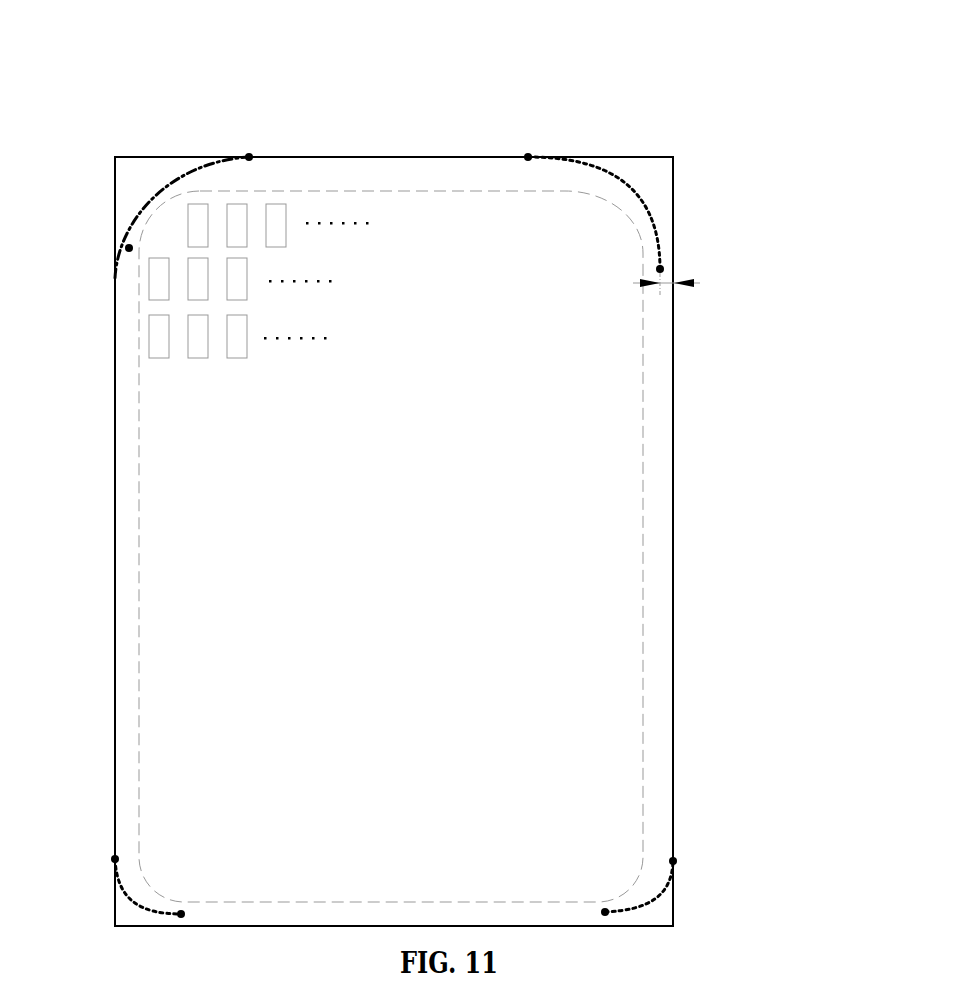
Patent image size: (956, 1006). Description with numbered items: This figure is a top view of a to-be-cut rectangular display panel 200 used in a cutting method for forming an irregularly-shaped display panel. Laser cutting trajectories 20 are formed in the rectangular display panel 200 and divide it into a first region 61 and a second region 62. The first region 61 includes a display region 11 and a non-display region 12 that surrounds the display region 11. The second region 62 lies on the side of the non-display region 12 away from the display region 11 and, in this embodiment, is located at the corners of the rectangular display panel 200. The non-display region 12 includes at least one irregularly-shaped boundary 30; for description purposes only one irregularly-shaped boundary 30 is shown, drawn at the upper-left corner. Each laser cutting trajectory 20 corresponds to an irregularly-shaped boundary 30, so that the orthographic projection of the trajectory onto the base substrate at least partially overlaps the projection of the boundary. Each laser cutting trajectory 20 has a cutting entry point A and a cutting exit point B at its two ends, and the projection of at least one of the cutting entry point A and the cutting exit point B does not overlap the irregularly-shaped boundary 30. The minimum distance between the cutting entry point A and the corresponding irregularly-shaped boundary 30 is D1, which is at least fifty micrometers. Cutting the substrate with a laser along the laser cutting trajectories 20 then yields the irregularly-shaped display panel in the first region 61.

The rectangular display panel 200 is at (655, 44).
The irregularly-shaped boundary 30 is at (117, 262).
The cutting exit point B is at (528, 157).
The second region 62 is at (650, 190).
The laser cutting trajectory 20 is at (648, 215).
The cutting entry point A is at (662, 263).
The minimum distance D1 is at (666, 295).
The non-display region 12 is at (667, 460).
The display region 11 is at (642, 545).
The first region 61 is at (768, 425).